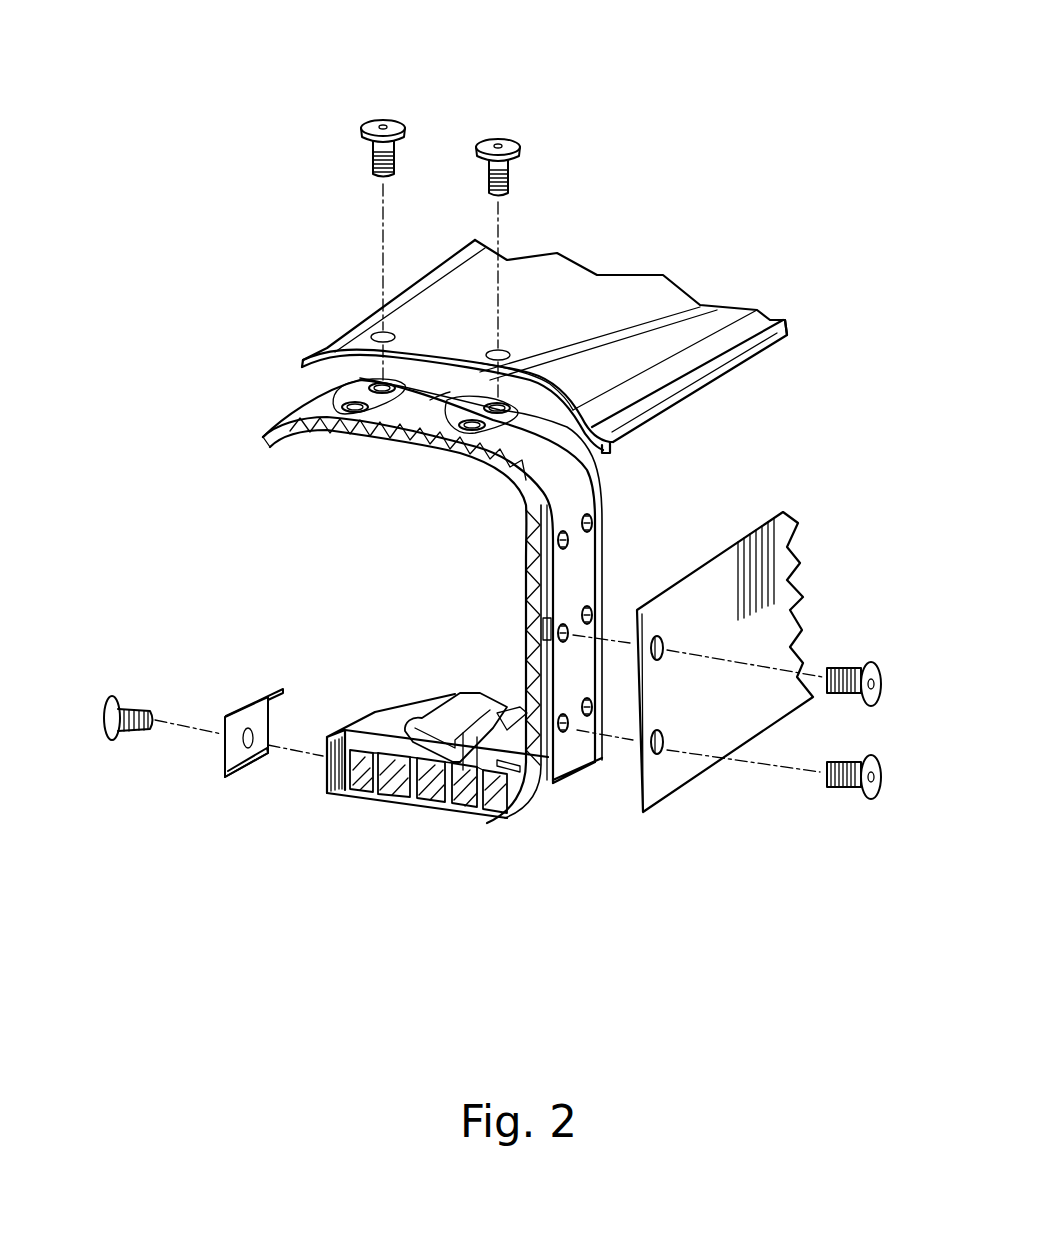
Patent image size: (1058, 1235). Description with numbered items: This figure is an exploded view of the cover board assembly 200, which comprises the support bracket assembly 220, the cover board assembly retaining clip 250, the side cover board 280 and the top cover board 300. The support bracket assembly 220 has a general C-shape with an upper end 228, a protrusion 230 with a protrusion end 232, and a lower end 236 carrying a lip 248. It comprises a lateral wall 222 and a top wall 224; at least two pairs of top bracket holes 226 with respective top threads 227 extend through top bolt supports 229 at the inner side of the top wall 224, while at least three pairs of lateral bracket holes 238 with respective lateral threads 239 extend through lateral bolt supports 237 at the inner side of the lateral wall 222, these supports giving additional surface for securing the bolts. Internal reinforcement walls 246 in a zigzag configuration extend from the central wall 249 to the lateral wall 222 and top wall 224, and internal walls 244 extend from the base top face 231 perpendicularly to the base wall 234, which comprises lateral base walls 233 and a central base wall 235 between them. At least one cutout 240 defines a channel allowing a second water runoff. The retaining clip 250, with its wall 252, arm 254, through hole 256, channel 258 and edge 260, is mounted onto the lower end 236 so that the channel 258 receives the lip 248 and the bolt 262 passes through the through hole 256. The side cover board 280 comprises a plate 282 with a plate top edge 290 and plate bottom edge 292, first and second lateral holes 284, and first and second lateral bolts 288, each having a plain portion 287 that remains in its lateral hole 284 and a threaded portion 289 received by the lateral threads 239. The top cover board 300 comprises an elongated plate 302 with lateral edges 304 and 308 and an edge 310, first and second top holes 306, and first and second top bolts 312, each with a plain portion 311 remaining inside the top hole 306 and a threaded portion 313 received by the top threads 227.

The cover board assembly 200 is at (797, 407).
The support bracket assembly 220 is at (503, 587).
The lateral wall 222 is at (583, 567).
The top wall 224 is at (440, 402).
The top bracket holes 226 is at (370, 382).
The top threads 227 is at (377, 423).
The upper end 228 is at (267, 433).
The top bolt supports 229 is at (432, 402).
The protrusion 230 is at (455, 715).
The base top face 231 is at (388, 728).
The protrusion end 232 is at (430, 700).
The lateral base walls 233 is at (367, 778).
The base wall 234 is at (395, 795).
The central base wall 235 is at (437, 790).
The lower end 236 is at (327, 758).
The lateral bolt supports 237 is at (540, 717).
The lateral bracket holes 238 is at (563, 527).
The lateral threads 239 is at (590, 527).
The cutout 240 is at (517, 790).
The internal walls 244 is at (363, 780).
The internal reinforcement walls 246 is at (533, 598).
The lip 248 is at (327, 793).
The central wall 249 is at (527, 562).
The cover board assembly retaining clip 250 is at (197, 752).
The wall 252 is at (240, 755).
The arm 254 is at (265, 693).
The through hole 256 is at (245, 735).
The channel 258 is at (237, 760).
The edge 260 is at (247, 757).
The bolt 262 is at (103, 708).
The side cover board 280 is at (820, 580).
The plate 282 is at (800, 570).
The lateral holes 284 is at (661, 657).
The plain portion 287 is at (870, 667).
The lateral bolts 288 is at (875, 707).
The threaded portion 289 is at (843, 667).
The plate top edge 290 is at (762, 520).
The plate bottom edge 292 is at (663, 745).
The top cover board 300 is at (640, 262).
The elongated plate 302 is at (560, 285).
The lateral edge 304 is at (786, 320).
The top holes 306 is at (373, 330).
The lateral edge 308 is at (300, 363).
The edge 310 is at (327, 348).
The plain portion 311 is at (370, 143).
The top bolts 312 is at (490, 146).
The threaded portion 313 is at (490, 182).